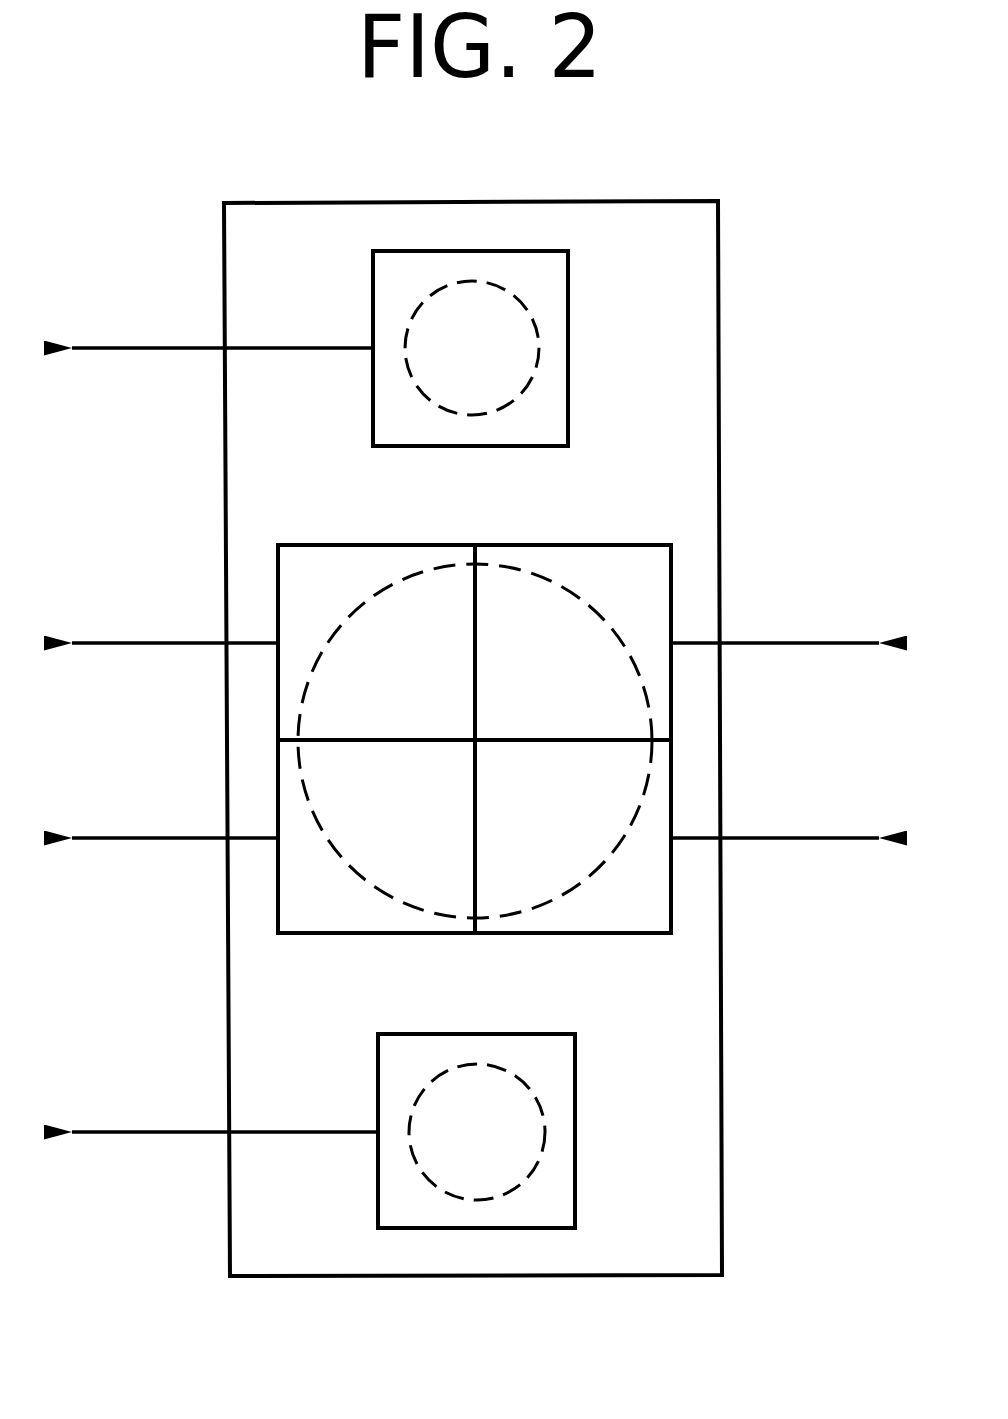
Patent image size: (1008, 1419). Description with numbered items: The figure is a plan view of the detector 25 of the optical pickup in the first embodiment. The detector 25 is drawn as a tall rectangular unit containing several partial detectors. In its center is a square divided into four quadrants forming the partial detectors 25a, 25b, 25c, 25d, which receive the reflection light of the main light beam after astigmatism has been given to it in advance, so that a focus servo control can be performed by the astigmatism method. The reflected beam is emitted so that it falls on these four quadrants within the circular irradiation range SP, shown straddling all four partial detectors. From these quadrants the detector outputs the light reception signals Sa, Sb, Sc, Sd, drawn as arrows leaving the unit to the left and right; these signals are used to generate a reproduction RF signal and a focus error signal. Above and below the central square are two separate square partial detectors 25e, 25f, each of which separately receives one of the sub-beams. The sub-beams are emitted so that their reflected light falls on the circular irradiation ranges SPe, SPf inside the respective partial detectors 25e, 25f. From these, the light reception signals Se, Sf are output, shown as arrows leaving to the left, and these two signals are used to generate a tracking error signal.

The detector 25 is at (719, 422).
The partial detector 25a is at (278, 587).
The partial detector 25b is at (671, 582).
The partial detector 25c is at (673, 913).
The partial detector 25d is at (278, 913).
The partial detector 25e is at (560, 282).
The partial detector 25f is at (563, 1066).
The irradiation range SP is at (640, 783).
The irradiation range SPe is at (541, 350).
The irradiation range SPf is at (545, 1135).
The light reception signal Sa is at (158, 644).
The light reception signal Sb is at (808, 644).
The light reception signal Sc is at (808, 839).
The light reception signal Sd is at (160, 839).
The light reception signal Se is at (158, 349).
The light reception signal Sf is at (160, 1133).